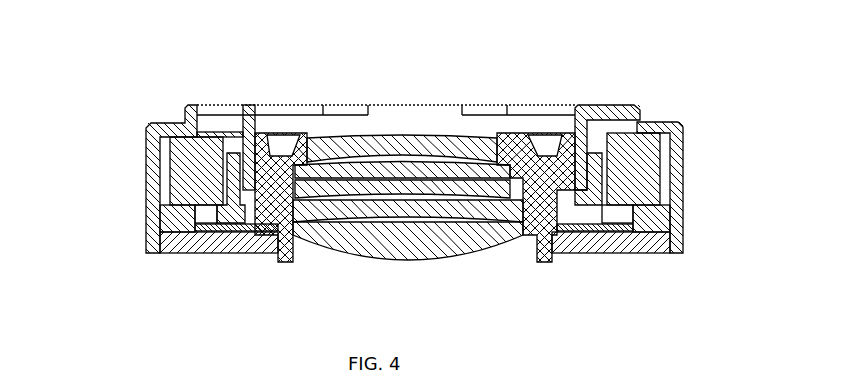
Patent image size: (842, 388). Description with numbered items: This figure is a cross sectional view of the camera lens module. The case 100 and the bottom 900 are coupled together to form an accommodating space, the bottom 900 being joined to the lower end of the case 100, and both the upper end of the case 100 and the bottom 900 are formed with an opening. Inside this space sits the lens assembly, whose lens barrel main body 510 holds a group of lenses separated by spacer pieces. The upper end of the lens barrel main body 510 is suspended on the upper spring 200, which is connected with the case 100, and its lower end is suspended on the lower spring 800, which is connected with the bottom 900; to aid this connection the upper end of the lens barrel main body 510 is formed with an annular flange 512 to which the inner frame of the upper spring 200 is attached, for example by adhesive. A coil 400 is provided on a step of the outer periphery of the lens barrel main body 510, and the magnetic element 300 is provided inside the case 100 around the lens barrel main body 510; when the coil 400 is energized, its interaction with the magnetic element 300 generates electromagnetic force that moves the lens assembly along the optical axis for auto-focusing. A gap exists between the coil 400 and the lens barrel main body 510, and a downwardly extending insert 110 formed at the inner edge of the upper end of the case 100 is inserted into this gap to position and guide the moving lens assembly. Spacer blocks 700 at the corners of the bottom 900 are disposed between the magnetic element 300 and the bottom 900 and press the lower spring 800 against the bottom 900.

The case 100 is at (677, 152).
The insert 110 is at (580, 153).
The upper spring 200 is at (262, 132).
The magnetic element 300 is at (188, 180).
The coil 400 is at (230, 153).
The lens barrel main body 510 is at (555, 215).
The annular flange 512 is at (550, 118).
The spacer block 700 is at (167, 222).
The lower spring 800 is at (150, 232).
The bottom 900 is at (177, 252).